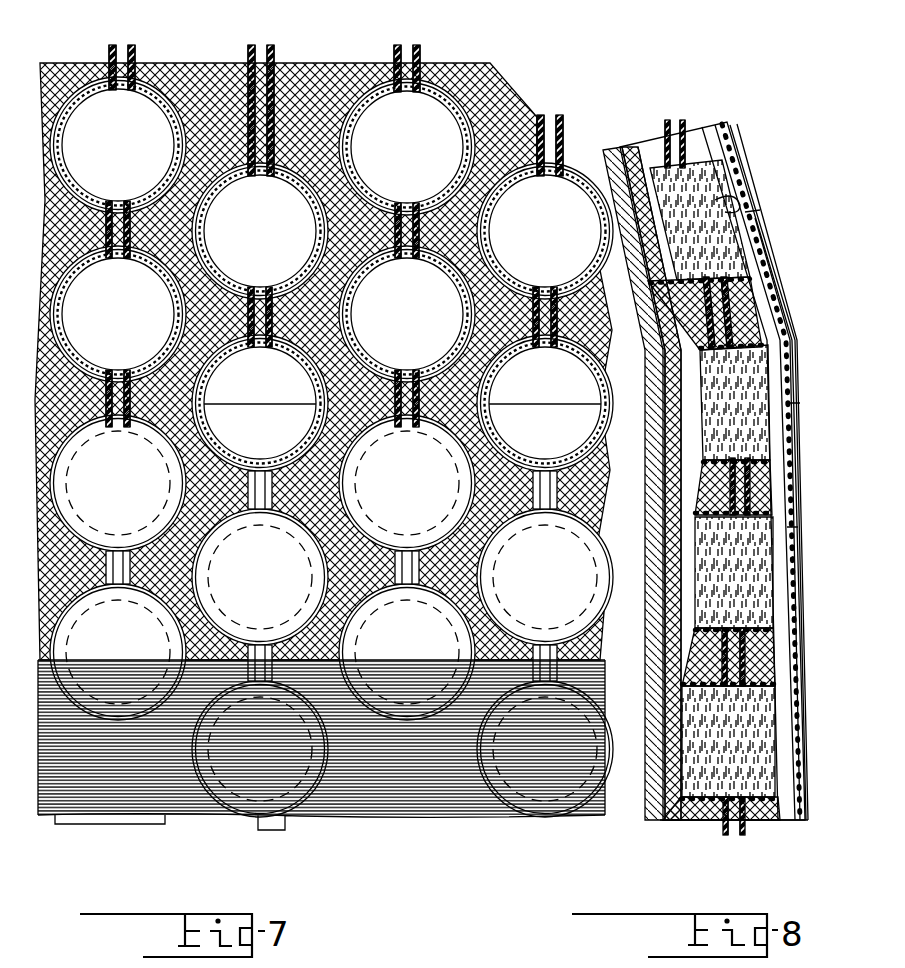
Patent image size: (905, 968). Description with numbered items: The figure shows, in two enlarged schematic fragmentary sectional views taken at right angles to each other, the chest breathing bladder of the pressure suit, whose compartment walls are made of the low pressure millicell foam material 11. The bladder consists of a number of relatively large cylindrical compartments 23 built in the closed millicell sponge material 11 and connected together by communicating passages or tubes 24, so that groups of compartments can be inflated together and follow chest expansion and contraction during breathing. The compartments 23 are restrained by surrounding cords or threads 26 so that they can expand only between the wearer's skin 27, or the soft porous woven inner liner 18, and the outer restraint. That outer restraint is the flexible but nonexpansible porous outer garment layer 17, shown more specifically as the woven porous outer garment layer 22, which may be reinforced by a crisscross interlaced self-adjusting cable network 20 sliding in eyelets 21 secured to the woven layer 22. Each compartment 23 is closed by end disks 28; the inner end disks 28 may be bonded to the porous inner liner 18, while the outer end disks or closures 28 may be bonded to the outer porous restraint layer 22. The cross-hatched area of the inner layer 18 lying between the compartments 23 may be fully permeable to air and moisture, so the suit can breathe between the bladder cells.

In FIG. 7, the low pressure millicell foam material 11 is at (172, 305).
In FIG. 8, the low pressure millicell foam material 11 is at (792, 375).
In FIG. 7, the outer garment layer 17 is at (302, 815).
In FIG. 8, the outer garment layer 17 is at (779, 282).
In FIG. 7, the inner liner 18 is at (325, 63).
In FIG. 8, the inner liner 18 is at (670, 330).
In FIG. 8, the cable network 20 is at (760, 225).
In FIG. 8, the eyelet 21 is at (752, 213).
In FIG. 7, the woven porous outer garment layer 22 is at (500, 815).
In FIG. 8, the woven porous outer garment layer 22 is at (800, 740).
In FIG. 7, the cylindrical compartments 23 is at (118, 143).
In FIG. 8, the cylindrical compartments 23 is at (760, 245).
In FIG. 7, the communicating tubes 24 is at (122, 52).
In FIG. 8, the communicating tubes 24 is at (676, 140).
In FIG. 7, the cords or threads 26 is at (468, 96).
In FIG. 8, the cords or threads 26 is at (662, 170).
In FIG. 8, the skin 27 is at (662, 250).
In FIG. 7, the end disks 28 is at (262, 262).
In FIG. 8, the end disks 28 is at (740, 195).